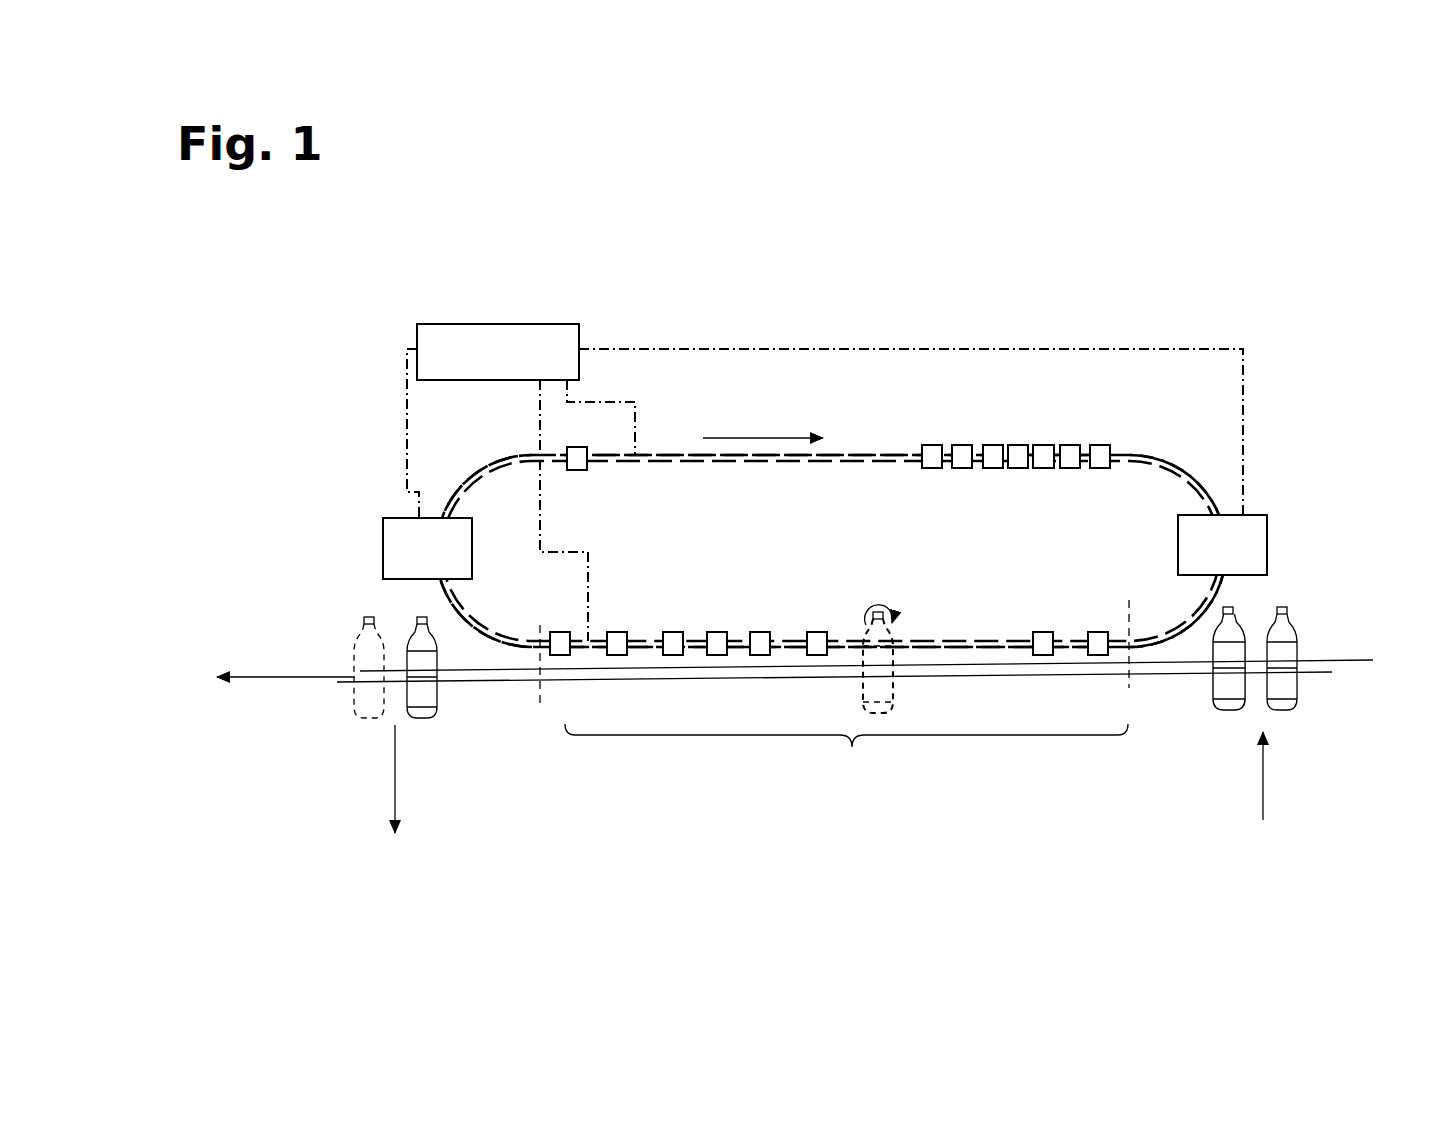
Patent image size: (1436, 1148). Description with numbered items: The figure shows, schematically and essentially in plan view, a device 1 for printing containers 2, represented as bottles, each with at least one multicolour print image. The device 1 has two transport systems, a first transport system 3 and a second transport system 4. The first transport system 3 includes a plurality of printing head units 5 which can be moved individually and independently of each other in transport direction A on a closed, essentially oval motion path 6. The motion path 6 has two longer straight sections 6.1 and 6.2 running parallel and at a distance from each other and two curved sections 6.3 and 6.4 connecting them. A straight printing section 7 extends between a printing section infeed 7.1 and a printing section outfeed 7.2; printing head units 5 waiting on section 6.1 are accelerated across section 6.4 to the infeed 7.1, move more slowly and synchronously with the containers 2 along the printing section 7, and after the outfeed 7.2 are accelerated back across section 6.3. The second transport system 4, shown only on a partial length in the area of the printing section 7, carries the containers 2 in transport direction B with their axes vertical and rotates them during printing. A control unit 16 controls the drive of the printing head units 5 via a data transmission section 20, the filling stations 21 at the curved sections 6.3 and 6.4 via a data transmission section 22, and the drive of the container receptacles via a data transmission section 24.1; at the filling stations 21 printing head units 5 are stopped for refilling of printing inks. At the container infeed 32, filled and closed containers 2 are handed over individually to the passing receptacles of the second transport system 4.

The device for printing containers 1 is at (1098, 282).
The containers 2 is at (353, 697).
The first transport system 3 is at (965, 405).
The second transport system 4 is at (473, 700).
The printing head units 5 is at (1102, 445).
The closed motion path 6 is at (818, 480).
The straight section 6.1 is at (877, 446).
The straight section 6.2 is at (962, 630).
The curved section 6.3 is at (447, 600).
The curved section 6.4 is at (1193, 472).
The printing section 7 is at (846, 770).
The printing section infeed 7.1 is at (1116, 625).
The printing section outfeed 7.2 is at (519, 693).
The control unit 16 is at (469, 323).
The data transmission section 20 is at (640, 410).
The filling stations 21 is at (383, 532).
The data transmission section 22 is at (404, 424).
The data transmission section 24.1 is at (545, 503).
The container infeed 32 is at (833, 779).